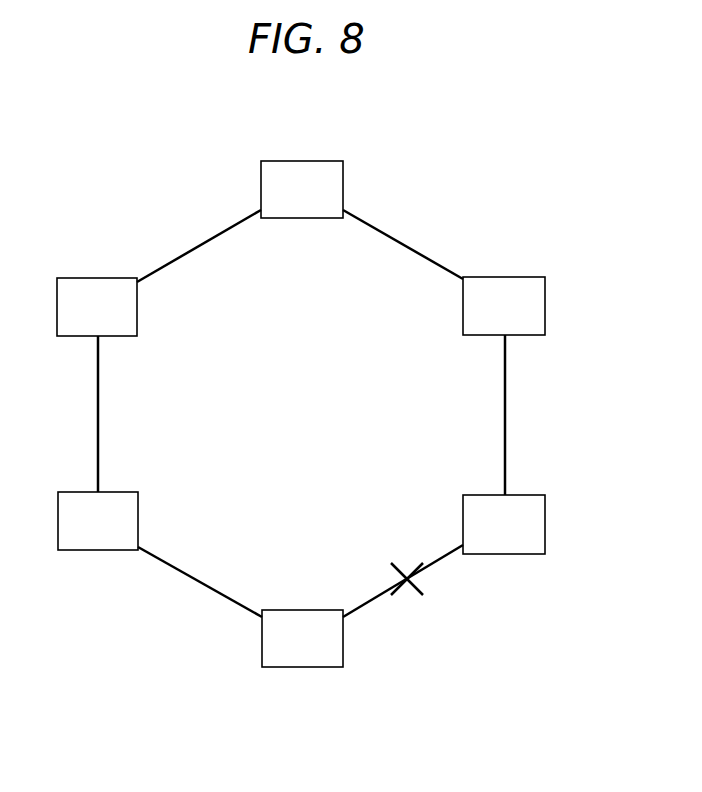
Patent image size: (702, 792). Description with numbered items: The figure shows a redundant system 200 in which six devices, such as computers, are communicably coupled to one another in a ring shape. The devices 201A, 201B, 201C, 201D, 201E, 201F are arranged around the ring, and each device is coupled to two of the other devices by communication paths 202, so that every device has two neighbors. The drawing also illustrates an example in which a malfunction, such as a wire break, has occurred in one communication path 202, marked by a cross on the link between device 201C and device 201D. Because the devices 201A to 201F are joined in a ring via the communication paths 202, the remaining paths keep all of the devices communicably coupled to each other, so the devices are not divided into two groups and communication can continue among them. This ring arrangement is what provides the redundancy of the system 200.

The system 200 is at (165, 188).
The device 201A is at (303, 161).
The device 201B is at (505, 277).
The device 201C is at (528, 495).
The device 201D is at (297, 667).
The device 201E is at (70, 492).
The device 201F is at (97, 278).
The communication path 202 is at (403, 243).